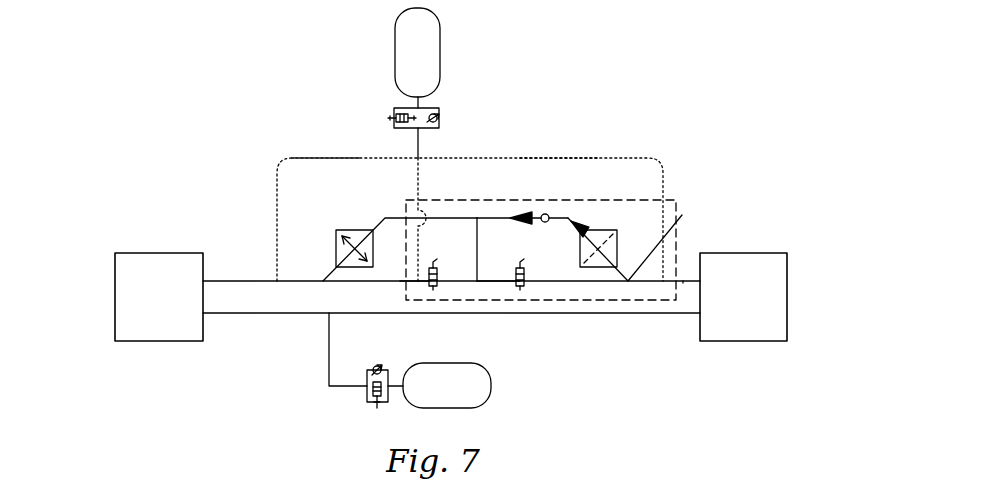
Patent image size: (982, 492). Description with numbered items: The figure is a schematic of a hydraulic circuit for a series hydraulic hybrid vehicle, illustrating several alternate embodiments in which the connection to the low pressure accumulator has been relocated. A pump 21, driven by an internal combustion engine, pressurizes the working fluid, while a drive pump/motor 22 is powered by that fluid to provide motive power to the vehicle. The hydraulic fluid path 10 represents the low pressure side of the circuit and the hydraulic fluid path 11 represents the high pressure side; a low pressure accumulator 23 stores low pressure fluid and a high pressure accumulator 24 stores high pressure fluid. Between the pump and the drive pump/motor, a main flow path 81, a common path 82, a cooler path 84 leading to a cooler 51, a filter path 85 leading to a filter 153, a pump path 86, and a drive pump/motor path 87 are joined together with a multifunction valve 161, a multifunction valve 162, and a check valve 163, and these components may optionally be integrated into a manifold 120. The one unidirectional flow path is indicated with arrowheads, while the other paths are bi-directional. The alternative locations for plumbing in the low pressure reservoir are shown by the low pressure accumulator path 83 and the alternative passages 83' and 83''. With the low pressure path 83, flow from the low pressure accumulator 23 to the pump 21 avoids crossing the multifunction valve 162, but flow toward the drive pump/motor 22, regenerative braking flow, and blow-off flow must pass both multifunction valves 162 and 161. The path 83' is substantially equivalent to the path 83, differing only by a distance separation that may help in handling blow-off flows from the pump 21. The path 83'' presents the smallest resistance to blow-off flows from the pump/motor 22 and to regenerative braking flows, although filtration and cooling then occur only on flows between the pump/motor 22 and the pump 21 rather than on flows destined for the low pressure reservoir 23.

The hydraulic fluid path 10 is at (257, 281).
The hydraulic fluid path 11 is at (258, 313).
The pump 21 is at (115, 298).
The drive pump/motor 22 is at (787, 280).
The low pressure accumulator 23 is at (395, 33).
The high pressure accumulator 24 is at (491, 386).
The cooler 51 is at (350, 231).
The main flow path 81 is at (485, 281).
The common path 82 is at (478, 248).
The low pressure accumulator path 83 is at (470, 183).
The low pressure path 83' is at (333, 123).
The low pressure path 83'' is at (560, 125).
The cooler path 84 is at (453, 218).
The filter path 85 is at (682, 215).
The pump path 86 is at (422, 284).
The drive pump/motor path 87 is at (683, 281).
The manifold 120 is at (573, 200).
The filter 153 is at (617, 250).
The multifunction valve 161 is at (523, 286).
The multifunction valve 162 is at (437, 286).
The check valve 163 is at (548, 223).